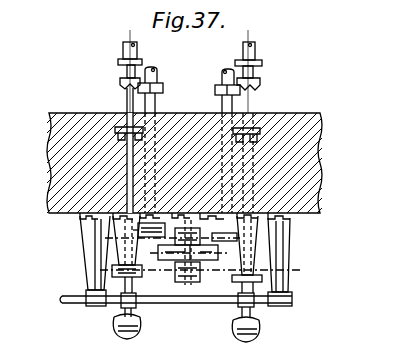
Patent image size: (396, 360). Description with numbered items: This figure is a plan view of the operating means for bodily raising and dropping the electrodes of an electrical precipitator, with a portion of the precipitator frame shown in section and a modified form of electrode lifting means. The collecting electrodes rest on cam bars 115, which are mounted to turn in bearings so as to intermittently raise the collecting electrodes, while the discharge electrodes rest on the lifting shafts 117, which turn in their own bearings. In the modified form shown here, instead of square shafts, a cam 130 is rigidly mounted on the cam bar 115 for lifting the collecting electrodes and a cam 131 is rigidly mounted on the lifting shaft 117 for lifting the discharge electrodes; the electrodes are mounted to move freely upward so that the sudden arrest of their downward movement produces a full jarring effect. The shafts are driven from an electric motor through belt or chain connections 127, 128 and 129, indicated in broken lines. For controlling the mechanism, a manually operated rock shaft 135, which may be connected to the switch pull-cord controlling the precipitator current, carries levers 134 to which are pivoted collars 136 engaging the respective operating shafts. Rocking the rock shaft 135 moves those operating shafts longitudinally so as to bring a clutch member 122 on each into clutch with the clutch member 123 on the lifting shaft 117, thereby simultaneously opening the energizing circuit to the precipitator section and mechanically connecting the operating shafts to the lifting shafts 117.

The cam bar 115 is at (147, 103).
The lifting shaft 117 is at (120, 80).
The clutch member 122 is at (258, 113).
The clutch member 123 is at (262, 80).
The belt or chain connection 127 is at (87, 255).
The belt or chain connection 128 is at (210, 237).
The belt or chain connection 129 is at (154, 271).
The cam 130 is at (163, 90).
The cam 131 is at (118, 62).
The lever 134 is at (135, 305).
The rock shaft 135 is at (74, 297).
The collar 136 is at (248, 336).